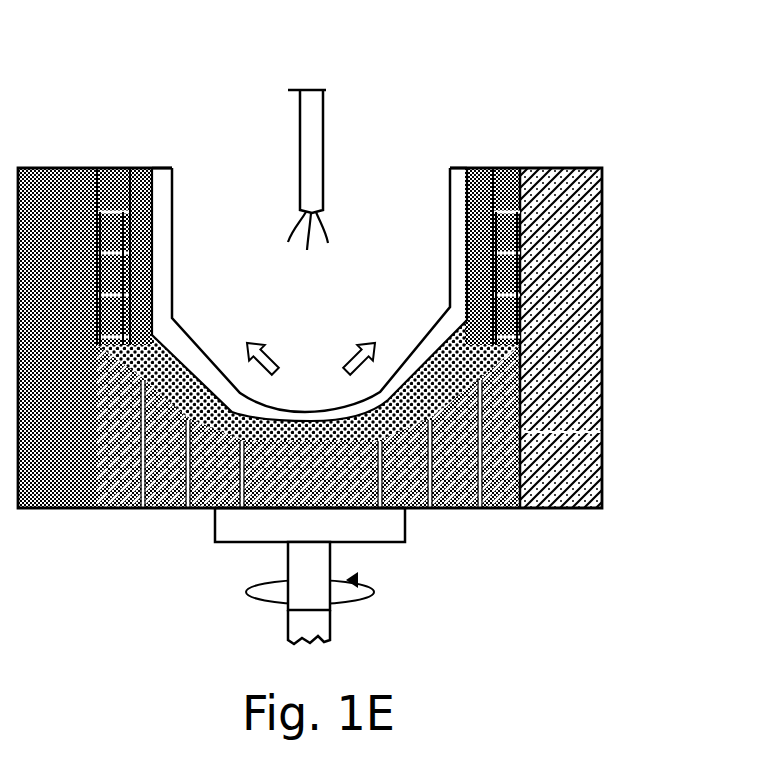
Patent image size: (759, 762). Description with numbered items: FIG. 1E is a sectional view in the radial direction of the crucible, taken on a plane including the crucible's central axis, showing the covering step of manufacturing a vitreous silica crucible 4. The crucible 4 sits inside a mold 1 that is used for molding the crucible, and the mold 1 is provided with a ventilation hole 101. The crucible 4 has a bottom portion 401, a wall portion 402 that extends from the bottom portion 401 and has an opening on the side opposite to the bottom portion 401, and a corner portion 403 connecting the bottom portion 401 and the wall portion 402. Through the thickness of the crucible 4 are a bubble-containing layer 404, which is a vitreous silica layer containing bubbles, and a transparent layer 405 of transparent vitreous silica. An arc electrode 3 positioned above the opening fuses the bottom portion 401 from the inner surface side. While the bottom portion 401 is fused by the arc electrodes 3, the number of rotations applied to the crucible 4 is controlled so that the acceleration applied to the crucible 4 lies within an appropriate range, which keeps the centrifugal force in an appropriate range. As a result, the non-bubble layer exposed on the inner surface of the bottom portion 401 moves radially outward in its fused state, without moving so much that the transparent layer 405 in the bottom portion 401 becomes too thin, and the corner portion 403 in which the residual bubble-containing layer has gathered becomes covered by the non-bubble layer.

The mold 1 is at (355, 342).
The arc electrode 3 is at (311, 90).
The vitreous silica crucible 4 is at (319, 231).
The ventilation hole 101 is at (525, 430).
The bottom portion 401 is at (311, 389).
The wall portion 402 is at (188, 215).
The corner portion 403 is at (203, 336).
The bubble-containing layer 404 is at (135, 168).
The transparent layer 405 is at (170, 168).